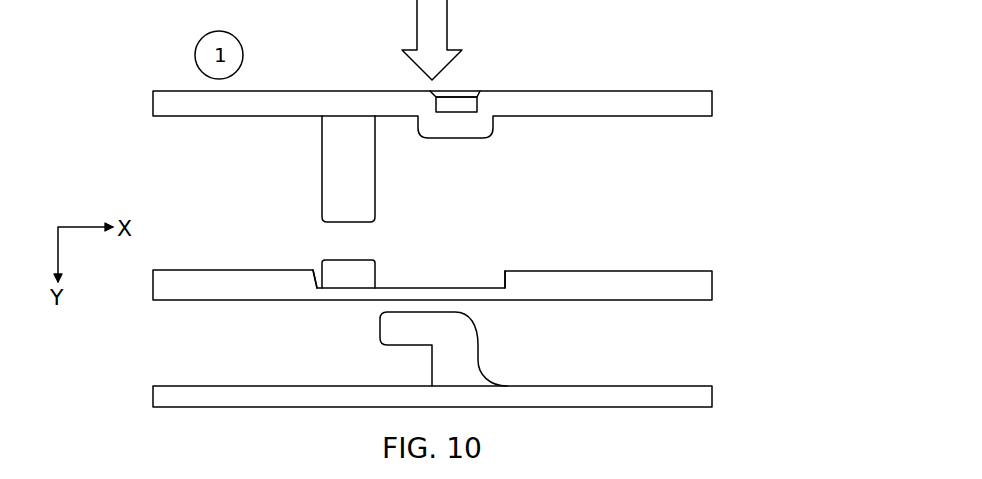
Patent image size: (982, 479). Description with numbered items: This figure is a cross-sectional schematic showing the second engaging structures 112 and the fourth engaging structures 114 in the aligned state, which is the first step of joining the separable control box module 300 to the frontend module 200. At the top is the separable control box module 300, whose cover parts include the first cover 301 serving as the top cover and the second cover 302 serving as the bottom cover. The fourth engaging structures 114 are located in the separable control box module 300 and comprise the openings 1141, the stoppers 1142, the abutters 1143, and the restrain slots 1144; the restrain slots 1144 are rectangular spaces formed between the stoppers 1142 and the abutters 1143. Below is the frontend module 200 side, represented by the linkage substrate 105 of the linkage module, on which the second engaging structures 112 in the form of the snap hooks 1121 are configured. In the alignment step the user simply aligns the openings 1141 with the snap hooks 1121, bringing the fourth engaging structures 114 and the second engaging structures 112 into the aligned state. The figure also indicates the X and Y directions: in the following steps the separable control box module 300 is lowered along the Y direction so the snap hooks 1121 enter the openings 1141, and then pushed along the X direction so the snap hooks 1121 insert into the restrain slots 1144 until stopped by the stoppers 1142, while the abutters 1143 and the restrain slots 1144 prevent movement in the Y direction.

The separable control box module 300 is at (751, 175).
The first cover 301 is at (712, 102).
The second cover 302 is at (712, 286).
The fourth engaging structures 114 is at (474, 239).
The openings 1141 is at (322, 270).
The stoppers 1142 is at (350, 260).
The abutters 1143 is at (348, 169).
The restrain slots 1144 is at (368, 243).
The frontend module 200 is at (752, 357).
The linkage substrate 105 is at (712, 395).
The second engaging structures 112 is at (376, 349).
The snap hooks 1121 is at (380, 330).